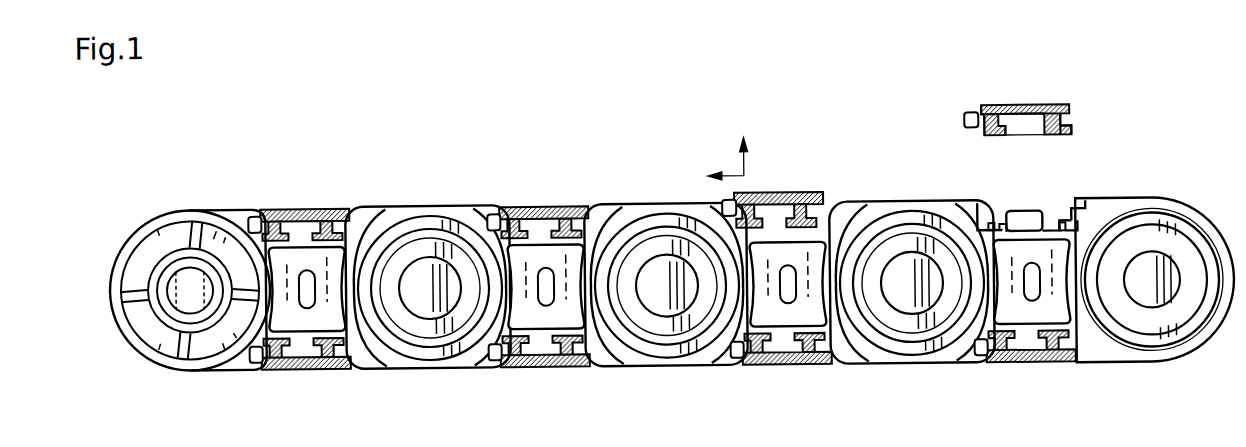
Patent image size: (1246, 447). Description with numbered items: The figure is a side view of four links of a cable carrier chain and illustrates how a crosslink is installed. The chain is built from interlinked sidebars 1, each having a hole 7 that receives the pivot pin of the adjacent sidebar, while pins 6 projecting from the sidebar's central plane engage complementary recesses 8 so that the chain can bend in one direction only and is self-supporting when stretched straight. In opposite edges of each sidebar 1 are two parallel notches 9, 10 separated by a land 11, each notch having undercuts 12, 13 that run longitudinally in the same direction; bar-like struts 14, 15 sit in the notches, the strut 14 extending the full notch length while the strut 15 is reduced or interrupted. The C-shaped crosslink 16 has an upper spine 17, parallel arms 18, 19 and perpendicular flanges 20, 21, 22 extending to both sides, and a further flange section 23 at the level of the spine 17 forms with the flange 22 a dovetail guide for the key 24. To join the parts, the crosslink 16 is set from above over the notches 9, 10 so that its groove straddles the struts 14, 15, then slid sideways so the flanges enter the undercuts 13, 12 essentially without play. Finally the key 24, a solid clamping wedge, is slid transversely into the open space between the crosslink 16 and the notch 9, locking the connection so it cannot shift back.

The sidebar 1 is at (302, 318).
The pin 6 is at (172, 345).
The hole 7 is at (1158, 265).
The recess 8 is at (150, 242).
The notch 9 is at (978, 212).
The notch 10 is at (1063, 232).
The land 11 is at (1030, 216).
The undercut 12 is at (1075, 230).
The undercut 13 is at (1002, 229).
The strut 14 is at (1050, 232).
The strut 15 is at (992, 228).
The crosslink 16 is at (298, 207).
The upper spine 17 is at (1027, 110).
The arm 18 is at (1066, 112).
The arm 19 is at (998, 110).
The flange 20 is at (1072, 136).
The flange 21 is at (1007, 135).
The flange 22 is at (985, 136).
The flange section 23 is at (985, 110).
The key 24 is at (263, 212).